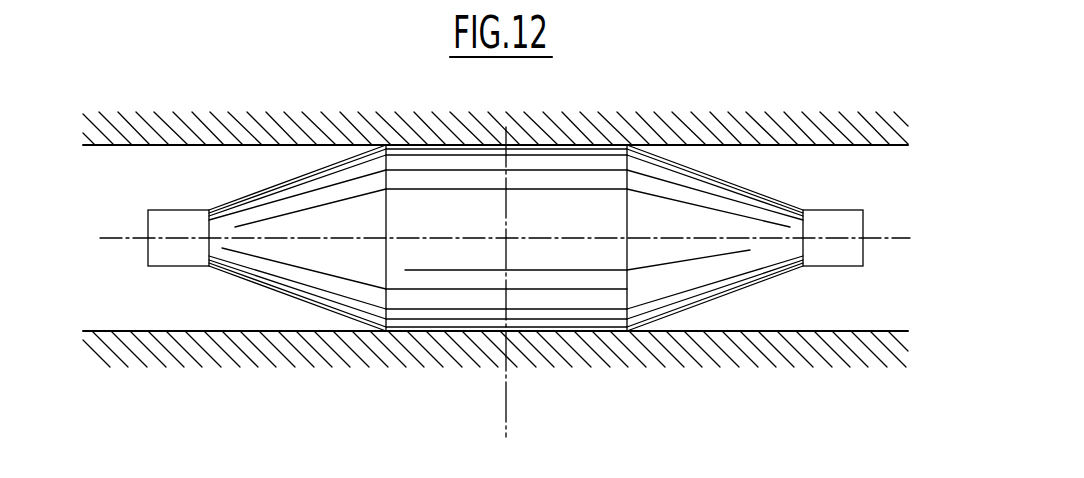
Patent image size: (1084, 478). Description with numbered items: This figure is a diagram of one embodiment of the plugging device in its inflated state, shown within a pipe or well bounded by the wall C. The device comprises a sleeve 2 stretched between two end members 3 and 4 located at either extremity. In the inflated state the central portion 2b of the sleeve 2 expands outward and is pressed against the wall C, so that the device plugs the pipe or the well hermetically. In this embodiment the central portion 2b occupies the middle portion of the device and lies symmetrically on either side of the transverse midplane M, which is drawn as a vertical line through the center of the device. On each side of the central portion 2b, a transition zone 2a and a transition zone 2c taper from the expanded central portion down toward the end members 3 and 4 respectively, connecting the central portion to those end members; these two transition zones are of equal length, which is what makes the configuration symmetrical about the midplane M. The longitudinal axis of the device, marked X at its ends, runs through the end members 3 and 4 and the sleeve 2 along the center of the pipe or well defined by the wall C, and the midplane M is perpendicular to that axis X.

The sleeve 2 is at (506, 238).
The transition zone 2a is at (303, 277).
The central portion 2b is at (437, 300).
The transition zone 2c is at (698, 280).
The end member 3 is at (178, 228).
The end member 4 is at (829, 222).
The wall C is at (760, 331).
The transverse midplane M is at (508, 378).
The longitudinal axis X-X' X is at (505, 257).